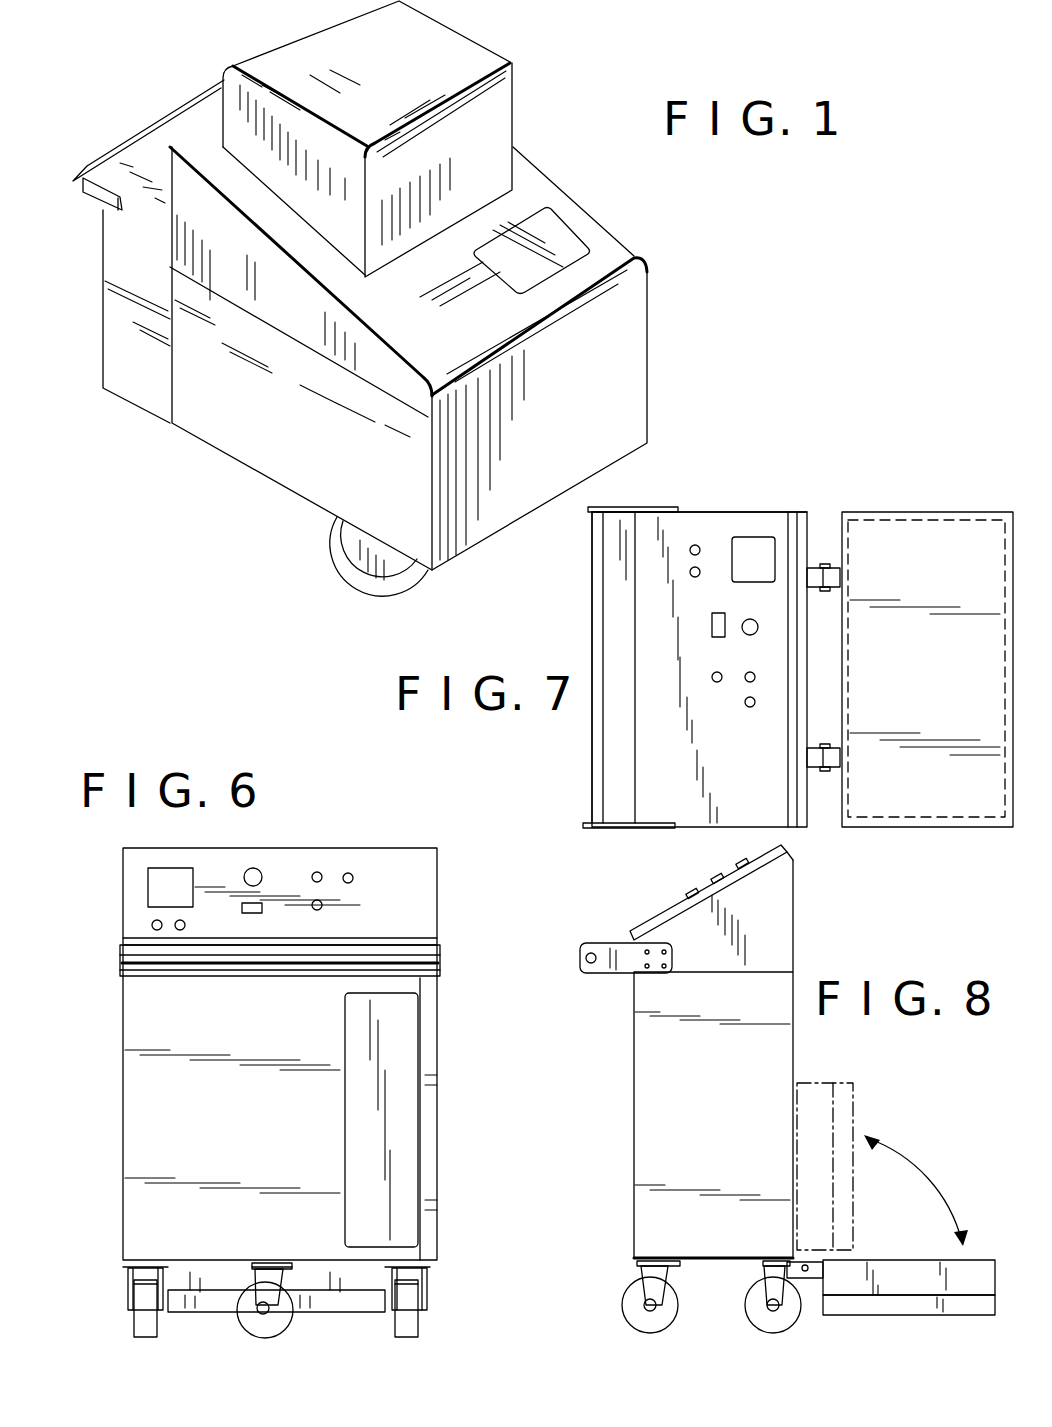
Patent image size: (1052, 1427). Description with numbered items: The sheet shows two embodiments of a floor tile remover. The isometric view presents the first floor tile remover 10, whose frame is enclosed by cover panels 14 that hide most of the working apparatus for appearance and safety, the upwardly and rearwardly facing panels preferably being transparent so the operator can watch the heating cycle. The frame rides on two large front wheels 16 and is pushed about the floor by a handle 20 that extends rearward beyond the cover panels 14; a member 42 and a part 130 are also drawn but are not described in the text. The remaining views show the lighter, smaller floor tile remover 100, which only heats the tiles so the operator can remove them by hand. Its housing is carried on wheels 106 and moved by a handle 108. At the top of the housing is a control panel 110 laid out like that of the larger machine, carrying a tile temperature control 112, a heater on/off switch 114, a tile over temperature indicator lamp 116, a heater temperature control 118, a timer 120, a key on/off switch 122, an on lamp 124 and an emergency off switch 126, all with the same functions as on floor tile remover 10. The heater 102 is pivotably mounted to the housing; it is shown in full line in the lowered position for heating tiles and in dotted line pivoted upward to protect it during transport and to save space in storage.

In FIG. 1, the floor tile remover 10 is at (603, 209).
In FIG. 1, the cover panels 14 is at (615, 365).
In FIG. 1, the front wheels 16 is at (372, 558).
In FIG. 1, the handle 20 is at (125, 260).
In FIG. 1, the handle 42 is at (170, 123).
In FIG. 7, the floor tile remover 100 is at (836, 506).
In FIG. 6, the floor tile remover 100 is at (443, 1114).
In FIG. 8, the floor tile remover 100 is at (806, 956).
In FIG. 7, the heater 102 is at (970, 510).
In FIG. 8, the heater 102 is at (920, 1280).
In FIG. 6, the wheels 106 is at (247, 1280).
In FIG. 7, the handle 108 is at (596, 597).
In FIG. 6, the handle 108 is at (153, 965).
In FIG. 8, the handle 108 is at (592, 966).
In FIG. 7, the control panel 110 is at (718, 512).
In FIG. 8, the control panel 110 is at (652, 920).
In FIG. 7, the tile temperature control 112 is at (752, 537).
In FIG. 6, the tile temperature control 112 is at (160, 877).
In FIG. 7, the heater on/off switch 114 is at (700, 547).
In FIG. 6, the heater on/off switch 114 is at (153, 922).
In FIG. 7, the tile over temperature indicator lamp 116 is at (690, 572).
In FIG. 6, the tile over temperature indicator lamp 116 is at (176, 928).
In FIG. 7, the heater temperature control 118 is at (758, 627).
In FIG. 6, the heater temperature control 118 is at (245, 873).
In FIG. 7, the timer 120 is at (710, 630).
In FIG. 6, the timer 120 is at (265, 906).
In FIG. 7, the key on/off switch 122 is at (756, 677).
In FIG. 6, the key on/off switch 122 is at (313, 873).
In FIG. 7, the on lamp 124 is at (717, 683).
In FIG. 6, the on lamp 124 is at (319, 900).
In FIG. 7, the emergency off switch 126 is at (756, 702).
In FIG. 6, the emergency off switch 126 is at (350, 873).
In FIG. 8, the shelf 130 is at (887, 1305).